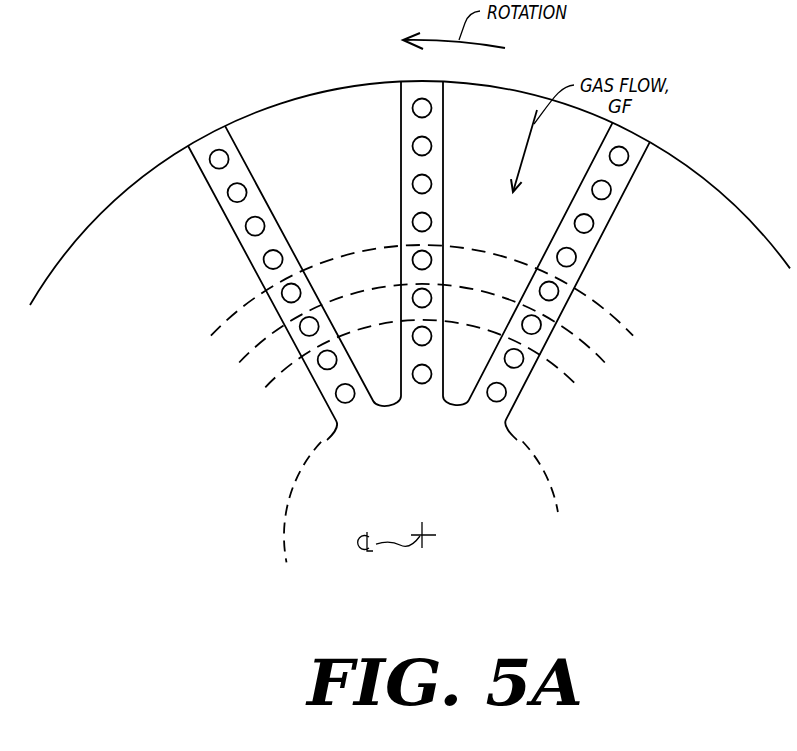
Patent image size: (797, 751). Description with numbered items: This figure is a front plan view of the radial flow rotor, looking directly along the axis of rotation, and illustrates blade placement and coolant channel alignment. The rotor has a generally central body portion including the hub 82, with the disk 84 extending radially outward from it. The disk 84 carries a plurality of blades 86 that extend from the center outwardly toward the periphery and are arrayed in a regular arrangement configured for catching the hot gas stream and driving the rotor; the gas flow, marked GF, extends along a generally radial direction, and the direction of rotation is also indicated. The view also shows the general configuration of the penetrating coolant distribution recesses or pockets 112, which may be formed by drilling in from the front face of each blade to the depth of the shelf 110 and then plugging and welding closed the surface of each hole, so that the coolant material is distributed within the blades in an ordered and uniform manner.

The hub 82 is at (500, 571).
The disk 84 is at (337, 103).
The blades 86 is at (238, 240).
The shelf 110 is at (580, 292).
The coolant distribution recesses or pockets 112 is at (555, 299).